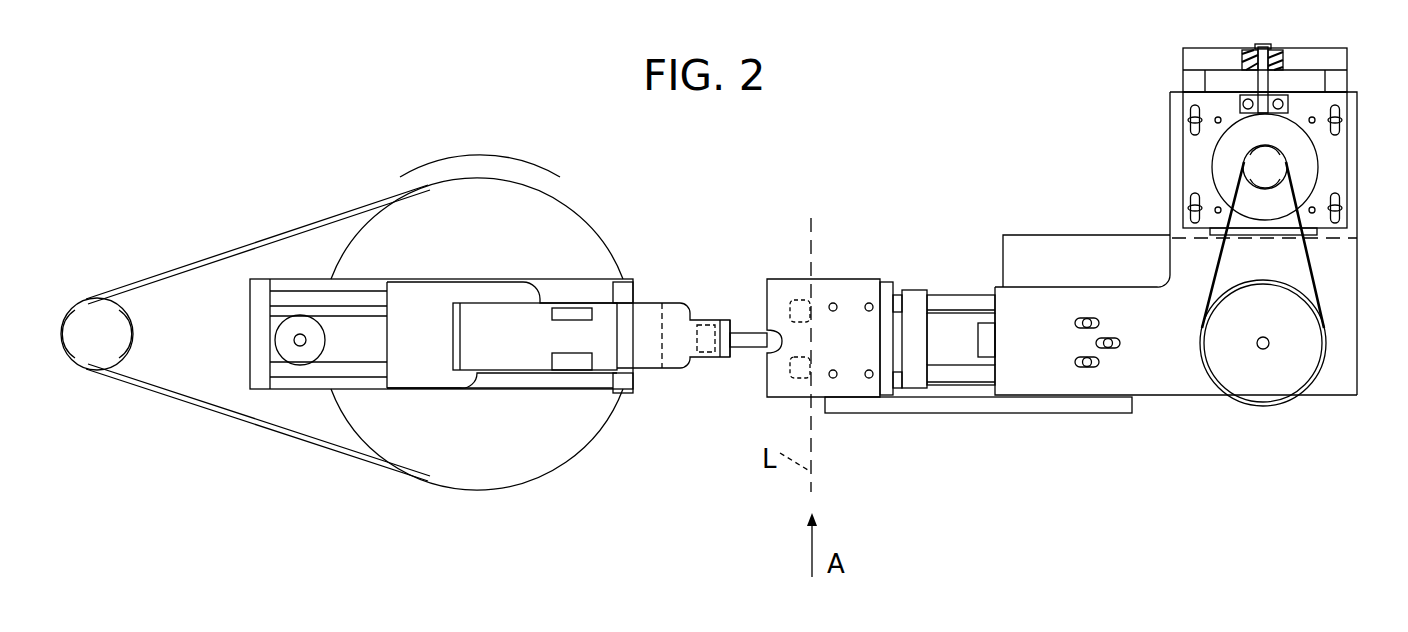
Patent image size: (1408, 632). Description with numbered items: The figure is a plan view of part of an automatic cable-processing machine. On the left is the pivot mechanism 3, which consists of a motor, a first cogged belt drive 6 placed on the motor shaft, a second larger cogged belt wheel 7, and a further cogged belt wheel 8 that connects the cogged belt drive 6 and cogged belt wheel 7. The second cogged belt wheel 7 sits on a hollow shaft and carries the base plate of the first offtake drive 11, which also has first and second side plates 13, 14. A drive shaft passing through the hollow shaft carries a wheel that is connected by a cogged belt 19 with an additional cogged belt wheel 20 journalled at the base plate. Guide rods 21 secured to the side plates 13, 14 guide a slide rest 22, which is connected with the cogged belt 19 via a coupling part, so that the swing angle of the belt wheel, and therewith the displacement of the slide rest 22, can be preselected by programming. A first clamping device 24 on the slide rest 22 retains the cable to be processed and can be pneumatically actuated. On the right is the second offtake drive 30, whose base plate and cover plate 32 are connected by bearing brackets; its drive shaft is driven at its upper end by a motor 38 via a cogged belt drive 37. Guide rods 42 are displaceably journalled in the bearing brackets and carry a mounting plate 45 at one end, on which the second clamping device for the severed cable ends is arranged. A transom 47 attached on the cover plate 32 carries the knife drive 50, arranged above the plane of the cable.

The pivot mechanism 3 is at (428, 180).
The first cogged belt drive 6 is at (90, 316).
The second cogged belt wheel 7 is at (535, 205).
The cogged belt wheel 8 is at (220, 260).
The first offtake drive 11 is at (512, 394).
The first side plate 13 is at (253, 377).
The second side plate 14 is at (633, 382).
The cogged belt 19 is at (323, 315).
The additional cogged belt wheel 20 is at (293, 357).
The guide rods 21 is at (320, 373).
The slide rest 22 is at (415, 378).
The first clamping device 24 is at (673, 330).
The second offtake drive 30 is at (1178, 403).
The cover plate 32 is at (1345, 327).
The cogged belt drive 37 is at (1317, 280).
The motor 38 is at (1308, 177).
The guide rods 42 is at (960, 303).
The mounting plate 45 is at (913, 382).
The transom 47 is at (1058, 406).
The knife drive 50 is at (858, 276).